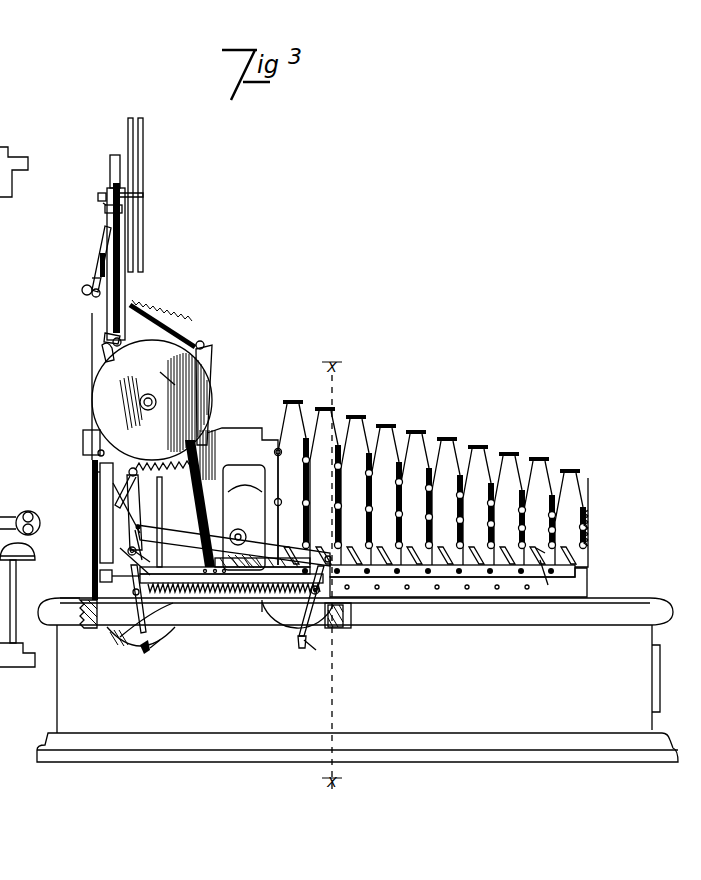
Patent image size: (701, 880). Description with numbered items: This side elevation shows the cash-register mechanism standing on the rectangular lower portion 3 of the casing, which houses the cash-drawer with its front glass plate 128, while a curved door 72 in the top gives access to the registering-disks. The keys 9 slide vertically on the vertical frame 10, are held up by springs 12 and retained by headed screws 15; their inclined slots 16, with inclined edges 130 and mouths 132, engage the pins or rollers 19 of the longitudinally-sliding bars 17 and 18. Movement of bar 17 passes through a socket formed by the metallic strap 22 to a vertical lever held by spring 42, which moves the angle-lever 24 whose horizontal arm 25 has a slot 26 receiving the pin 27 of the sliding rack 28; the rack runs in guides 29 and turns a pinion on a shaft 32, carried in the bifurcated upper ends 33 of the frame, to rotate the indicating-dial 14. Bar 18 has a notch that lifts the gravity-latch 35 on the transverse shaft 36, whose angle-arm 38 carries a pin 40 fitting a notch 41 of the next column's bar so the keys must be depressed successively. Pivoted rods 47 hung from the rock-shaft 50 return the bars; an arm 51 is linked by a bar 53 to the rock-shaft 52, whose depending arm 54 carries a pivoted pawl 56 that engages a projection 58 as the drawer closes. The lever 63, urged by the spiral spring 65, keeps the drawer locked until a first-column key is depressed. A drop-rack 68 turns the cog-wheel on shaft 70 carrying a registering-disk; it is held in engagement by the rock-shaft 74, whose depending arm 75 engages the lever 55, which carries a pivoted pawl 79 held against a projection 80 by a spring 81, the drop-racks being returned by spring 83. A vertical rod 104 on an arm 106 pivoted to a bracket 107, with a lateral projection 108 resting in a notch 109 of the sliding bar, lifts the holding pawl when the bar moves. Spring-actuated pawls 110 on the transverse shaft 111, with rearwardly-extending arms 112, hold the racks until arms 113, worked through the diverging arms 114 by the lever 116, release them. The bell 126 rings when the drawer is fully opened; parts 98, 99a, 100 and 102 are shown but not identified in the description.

The rectangular lower portion 3 is at (350, 668).
The keys 9 is at (429, 482).
The vertical frame 10 is at (246, 440).
The springs 12 is at (586, 531).
The indicating-dials 14 is at (135, 236).
The headed screws 15 is at (462, 496).
The inclined slots 16 is at (410, 550).
The longitudinally-sliding bar 17 is at (588, 572).
The longitudinally-sliding bar 18 is at (100, 578).
The pins or rollers 19 is at (386, 580).
The metallic strap 22 is at (262, 564).
The angle-lever 24 is at (212, 428).
The horizontal arm 25 is at (125, 348).
The slot 26 is at (104, 335).
The pin 27 is at (104, 352).
The sliding rack 28 is at (126, 290).
The guides 29 is at (106, 213).
The shafts 32 is at (98, 197).
The upper ends of vertical frame 33 is at (103, 204).
The gravity-latch 35 is at (178, 590).
The transverse shaft 36 is at (208, 590).
The angle-arm 38 is at (172, 540).
The laterally-extending pin 40 is at (234, 530).
The notch 41 is at (165, 630).
The spring 42 is at (190, 503).
The pivoted rods 47 is at (120, 548).
The rock-shaft 50 is at (105, 566).
The arm 51 is at (137, 527).
The rock-shaft 52 is at (332, 642).
The bar 53 is at (296, 553).
The depending arm 54 is at (348, 630).
The lever 55 is at (312, 590).
The pivoted pawl 56 is at (270, 625).
The projection 58 is at (300, 644).
The lever 63 is at (80, 598).
The spiral spring 65 is at (128, 515).
The drop-rack 68 is at (92, 447).
The shaft 70 is at (150, 409).
The curved door 72 is at (8, 340).
The rock-shaft 74 is at (129, 475).
The depending arm 75 is at (131, 478).
The pivoted pawl 79 is at (138, 646).
The projection 80 is at (118, 640).
The spring 81 is at (129, 599).
The spring 83 is at (258, 620).
The rack 98 is at (163, 326).
The pivot 99a is at (205, 346).
The arm 100 is at (213, 360).
The hatch 102 is at (164, 374).
The vertical rod 104 is at (208, 492).
The arm 106 is at (98, 620).
The bracket 107 is at (80, 628).
The lateral projection 108 is at (130, 548).
The notch 109 is at (159, 656).
The spring-actuated pawls 110 is at (103, 242).
The transverse shaft 111 is at (94, 297).
The rearwardly-extending arms 112 is at (82, 290).
The arms 113 is at (100, 262).
The diverging arms 114 is at (92, 278).
The lever 116 is at (92, 472).
The bell 126 is at (268, 490).
The glass plate 128 is at (662, 683).
The inclined edges 130 is at (545, 553).
The openings or mouths 132 is at (558, 577).